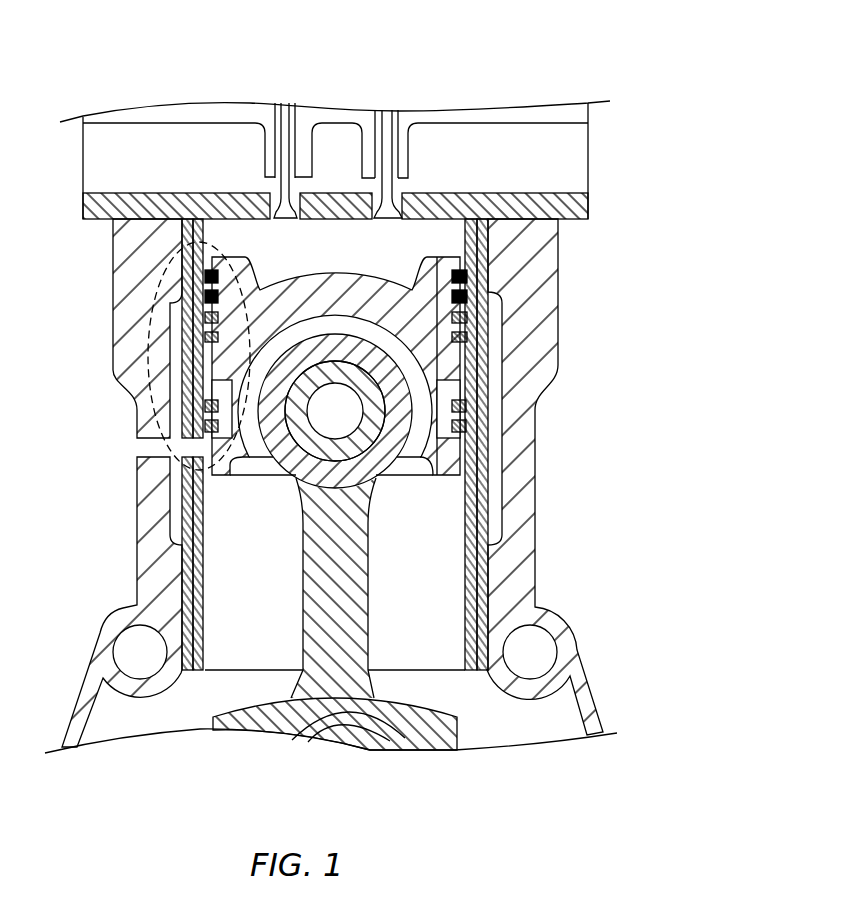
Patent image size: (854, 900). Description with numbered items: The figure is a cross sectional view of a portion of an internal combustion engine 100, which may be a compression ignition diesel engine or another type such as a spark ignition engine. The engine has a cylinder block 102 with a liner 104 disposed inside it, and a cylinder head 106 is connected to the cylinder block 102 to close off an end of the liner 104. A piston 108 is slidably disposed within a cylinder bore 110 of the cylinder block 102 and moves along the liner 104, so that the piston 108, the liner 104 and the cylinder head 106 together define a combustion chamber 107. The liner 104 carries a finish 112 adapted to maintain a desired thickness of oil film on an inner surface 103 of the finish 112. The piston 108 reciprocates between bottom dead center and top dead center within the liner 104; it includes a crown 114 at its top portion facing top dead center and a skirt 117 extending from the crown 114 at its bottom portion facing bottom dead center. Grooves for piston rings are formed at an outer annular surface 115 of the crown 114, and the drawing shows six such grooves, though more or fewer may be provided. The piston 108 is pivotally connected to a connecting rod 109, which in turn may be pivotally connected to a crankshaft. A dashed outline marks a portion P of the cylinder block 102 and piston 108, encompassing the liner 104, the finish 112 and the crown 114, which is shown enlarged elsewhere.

The internal combustion engine 100 is at (637, 72).
The cylinder block 102 is at (114, 372).
The inner surface 103 is at (460, 242).
The liner 104 is at (488, 548).
The cylinder head 106 is at (548, 158).
The combustion chamber 107 is at (228, 234).
The piston 108 is at (624, 391).
The connecting rod 109 is at (342, 588).
The cylinder bore 110 is at (230, 497).
The finish 112 is at (193, 348).
The crown 114 is at (445, 390).
The outer annular surface 115 is at (182, 258).
The skirt 117 is at (450, 448).
The portion P is at (150, 332).